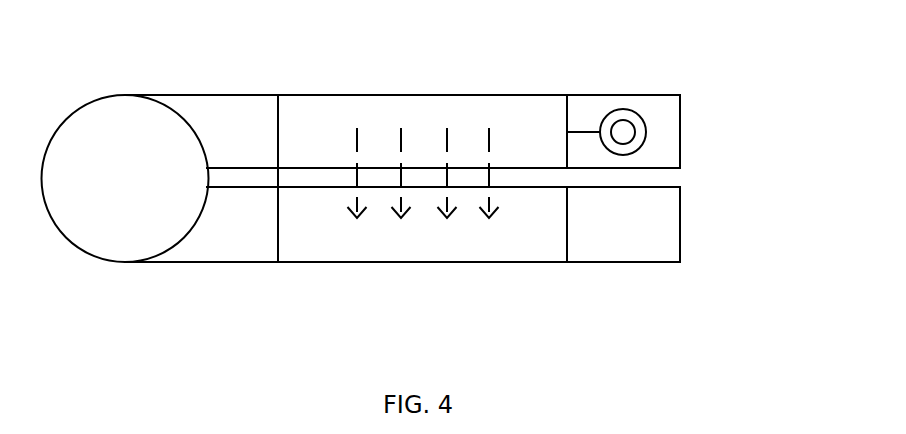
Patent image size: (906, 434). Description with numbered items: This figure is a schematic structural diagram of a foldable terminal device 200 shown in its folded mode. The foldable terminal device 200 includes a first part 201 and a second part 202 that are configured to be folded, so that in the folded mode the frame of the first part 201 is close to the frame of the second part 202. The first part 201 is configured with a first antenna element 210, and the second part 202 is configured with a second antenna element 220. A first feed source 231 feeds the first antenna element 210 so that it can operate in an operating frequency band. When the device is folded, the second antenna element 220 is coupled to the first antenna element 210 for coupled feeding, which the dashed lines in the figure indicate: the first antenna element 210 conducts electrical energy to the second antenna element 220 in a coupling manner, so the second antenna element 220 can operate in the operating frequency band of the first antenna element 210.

The foldable terminal device 200 is at (173, 65).
The first part 201 is at (610, 95).
The second part 202 is at (225, 262).
The first antenna element 210 is at (395, 95).
The second antenna element 220 is at (503, 262).
The first feed source 231 is at (645, 138).